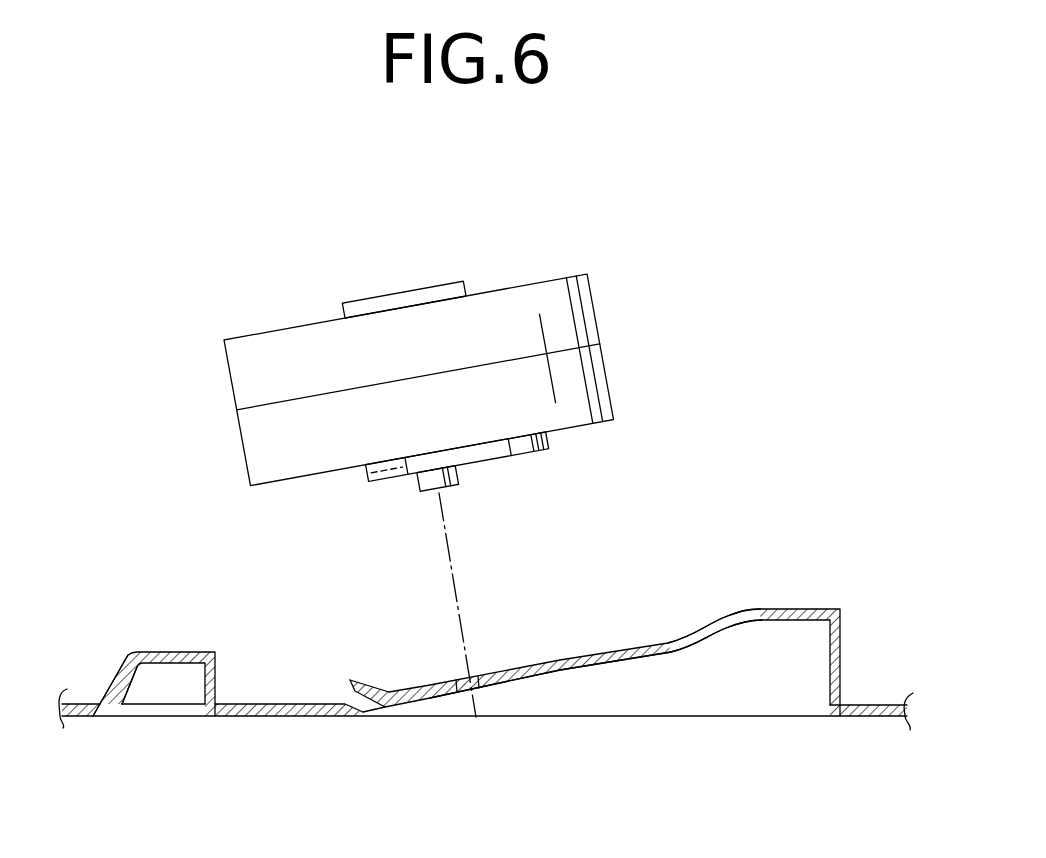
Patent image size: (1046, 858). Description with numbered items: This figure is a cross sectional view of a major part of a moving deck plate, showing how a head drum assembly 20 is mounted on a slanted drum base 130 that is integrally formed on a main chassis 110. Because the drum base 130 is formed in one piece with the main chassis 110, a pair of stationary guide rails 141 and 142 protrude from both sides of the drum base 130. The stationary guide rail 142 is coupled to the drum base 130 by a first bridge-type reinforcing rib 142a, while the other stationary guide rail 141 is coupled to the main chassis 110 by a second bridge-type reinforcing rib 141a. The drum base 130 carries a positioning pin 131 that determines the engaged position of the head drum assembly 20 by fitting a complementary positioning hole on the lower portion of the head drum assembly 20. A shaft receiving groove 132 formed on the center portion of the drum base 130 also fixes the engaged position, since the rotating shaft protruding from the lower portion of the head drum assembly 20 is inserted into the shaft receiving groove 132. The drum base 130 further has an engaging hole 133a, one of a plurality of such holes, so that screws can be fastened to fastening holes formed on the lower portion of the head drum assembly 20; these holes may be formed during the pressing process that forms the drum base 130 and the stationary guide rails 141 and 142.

The head drum assembly 20 is at (612, 333).
The main chassis 110 is at (230, 717).
The drum base 130 is at (632, 632).
The positioning pin 131 is at (355, 677).
The shaft receiving groove 132 is at (477, 716).
The engaging hole 133a is at (572, 668).
The stationary guide rail 141 is at (153, 651).
The second bridge-type reinforcing rib 141a is at (130, 716).
The stationary guide rail 142 is at (780, 608).
The first bridge-type reinforcing rib 142a is at (717, 630).